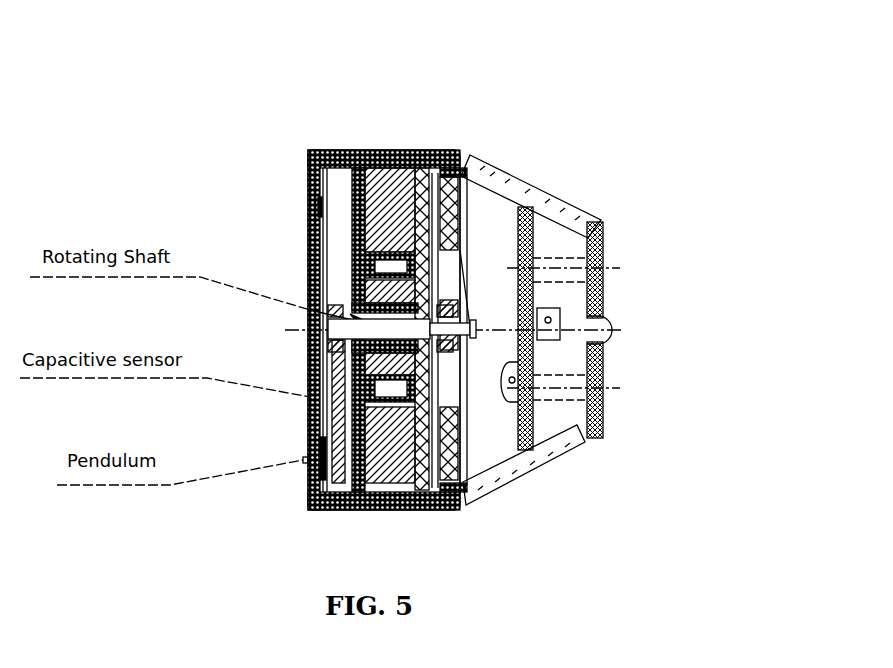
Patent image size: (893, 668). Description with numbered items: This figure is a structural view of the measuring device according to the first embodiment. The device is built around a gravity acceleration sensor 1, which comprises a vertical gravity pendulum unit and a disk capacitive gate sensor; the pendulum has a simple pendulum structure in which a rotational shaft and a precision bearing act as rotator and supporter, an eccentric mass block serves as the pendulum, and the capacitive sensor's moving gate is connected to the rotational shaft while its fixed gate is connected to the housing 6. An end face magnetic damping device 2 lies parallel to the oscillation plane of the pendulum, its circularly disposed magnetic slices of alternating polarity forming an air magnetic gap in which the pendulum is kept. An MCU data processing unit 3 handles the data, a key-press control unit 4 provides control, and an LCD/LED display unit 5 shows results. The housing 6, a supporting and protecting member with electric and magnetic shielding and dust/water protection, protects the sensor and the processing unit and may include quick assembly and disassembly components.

The gravity acceleration sensor 1 is at (562, 499).
The end face magnetic damping device 2 is at (272, 301).
The MCU data processing unit 3 is at (588, 349).
The key-press control unit 4 is at (627, 335).
The LCD/LED display unit 5 is at (643, 330).
The housing 6 is at (570, 164).